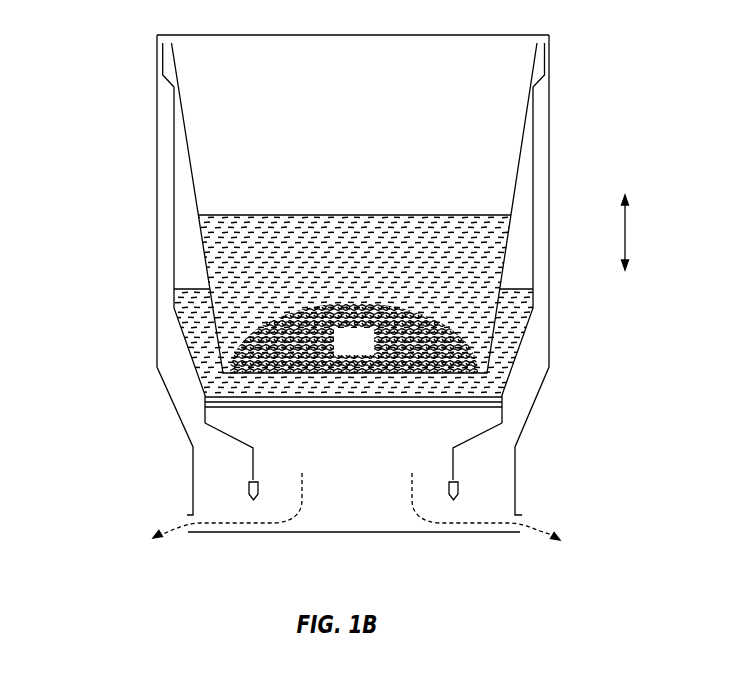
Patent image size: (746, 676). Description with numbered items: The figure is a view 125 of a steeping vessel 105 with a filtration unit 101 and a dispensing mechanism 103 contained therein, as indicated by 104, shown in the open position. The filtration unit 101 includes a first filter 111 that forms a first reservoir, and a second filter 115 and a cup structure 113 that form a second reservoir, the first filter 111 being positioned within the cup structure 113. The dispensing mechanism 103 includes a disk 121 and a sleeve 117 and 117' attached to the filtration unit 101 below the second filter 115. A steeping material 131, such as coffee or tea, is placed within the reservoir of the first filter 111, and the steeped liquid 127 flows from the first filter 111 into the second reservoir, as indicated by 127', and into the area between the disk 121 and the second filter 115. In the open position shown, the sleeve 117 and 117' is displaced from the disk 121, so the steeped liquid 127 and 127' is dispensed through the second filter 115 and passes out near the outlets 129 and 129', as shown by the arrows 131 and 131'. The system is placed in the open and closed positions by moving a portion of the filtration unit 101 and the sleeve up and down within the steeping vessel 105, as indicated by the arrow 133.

The filtration unit 101 is at (393, 233).
The dispensing mechanism 103 is at (485, 448).
The steeping vessel containing the filtration unit and dispensing mechanism 104 is at (165, 262).
The steeping vessel 105 is at (550, 182).
The first filter 111 is at (502, 322).
The cup structure 113 is at (518, 357).
The second filter 115 is at (370, 403).
The sleeve 117 is at (422, 471).
The sleeve 117' is at (287, 471).
The disk 121 is at (357, 535).
The view 125 is at (98, 65).
The steeped liquid 127 is at (354, 294).
The steeped liquid 127' is at (319, 342).
The right outlet 129 is at (550, 506).
The left outlet 129' is at (154, 508).
The arrow / steeping material 131 is at (397, 444).
The arrow 131' is at (223, 529).
The arrow 133 is at (627, 232).